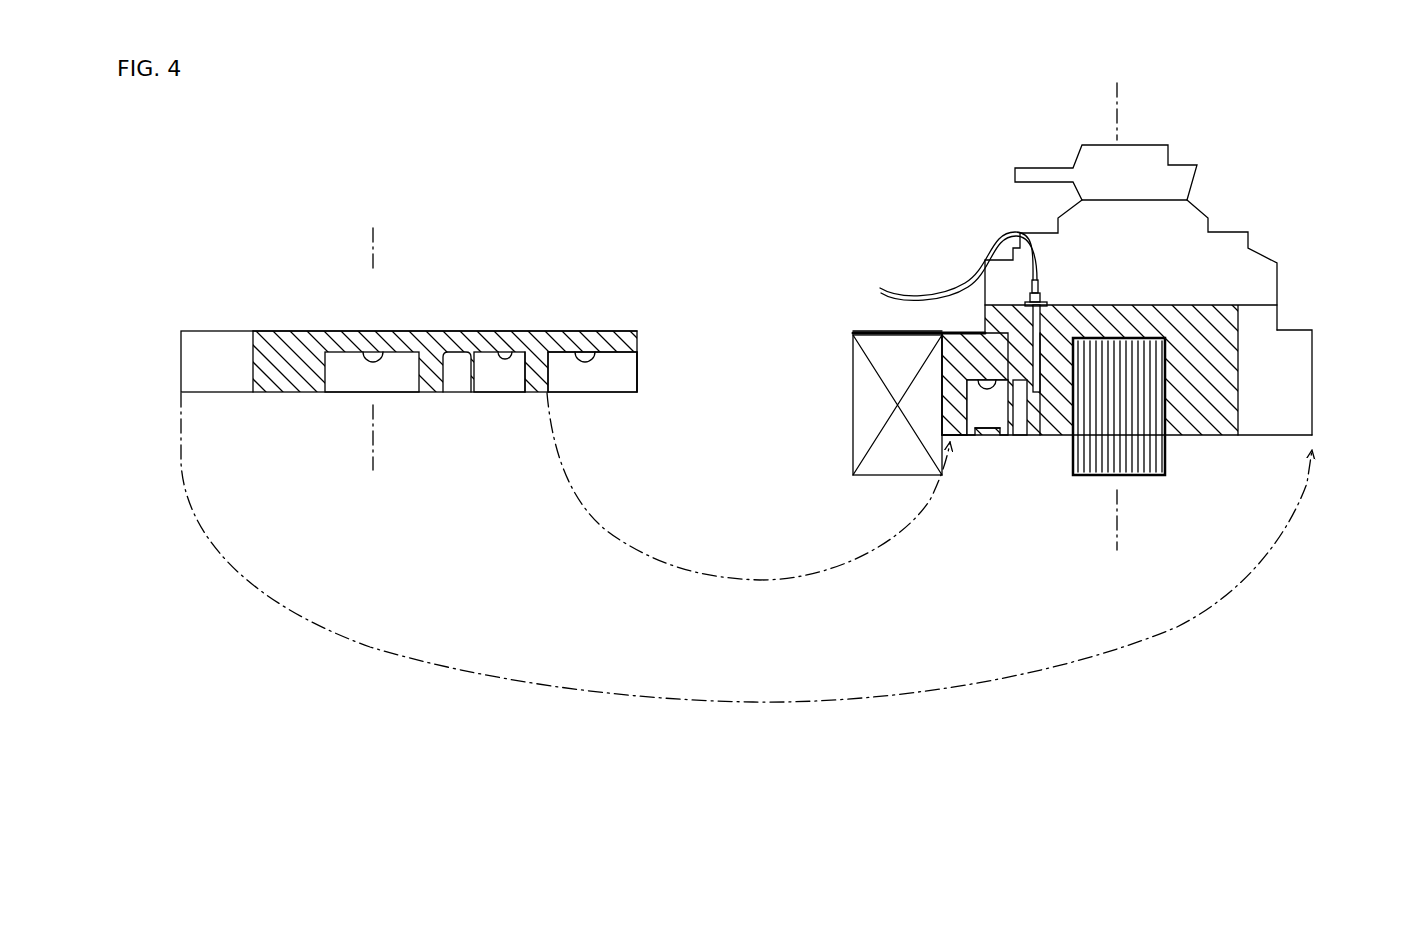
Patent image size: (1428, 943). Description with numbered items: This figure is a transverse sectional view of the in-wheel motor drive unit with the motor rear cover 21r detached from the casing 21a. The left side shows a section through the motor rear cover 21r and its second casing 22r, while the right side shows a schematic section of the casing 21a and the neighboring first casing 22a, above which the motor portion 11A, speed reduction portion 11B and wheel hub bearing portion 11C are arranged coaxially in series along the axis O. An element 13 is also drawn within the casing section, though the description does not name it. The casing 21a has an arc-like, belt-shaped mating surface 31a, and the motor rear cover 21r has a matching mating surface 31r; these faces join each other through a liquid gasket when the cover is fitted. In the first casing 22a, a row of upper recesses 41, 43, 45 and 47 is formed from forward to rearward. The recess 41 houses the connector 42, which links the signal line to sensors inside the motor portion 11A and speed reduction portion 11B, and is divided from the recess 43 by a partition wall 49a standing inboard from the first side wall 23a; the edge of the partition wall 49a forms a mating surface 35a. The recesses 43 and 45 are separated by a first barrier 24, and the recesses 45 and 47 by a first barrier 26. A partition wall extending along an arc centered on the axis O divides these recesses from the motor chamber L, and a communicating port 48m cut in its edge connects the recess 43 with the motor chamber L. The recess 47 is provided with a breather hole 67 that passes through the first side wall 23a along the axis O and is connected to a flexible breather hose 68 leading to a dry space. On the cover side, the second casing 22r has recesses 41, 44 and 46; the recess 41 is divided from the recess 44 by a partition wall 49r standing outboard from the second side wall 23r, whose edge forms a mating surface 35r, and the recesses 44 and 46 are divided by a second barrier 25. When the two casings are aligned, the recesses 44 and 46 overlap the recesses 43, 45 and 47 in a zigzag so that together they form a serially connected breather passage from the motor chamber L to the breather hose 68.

The motor portion 11A is at (1324, 393).
The speed reduction portion 11B is at (1289, 276).
The wheel hub bearing portion 11C is at (1212, 175).
The coil 13 is at (1139, 460).
The motor rear cover 21r is at (349, 328).
The casing 21a is at (1274, 442).
The second casing 22r is at (597, 328).
The first casing 22a is at (874, 326).
The second side wall 23r is at (639, 344).
The first side wall 23a is at (853, 335).
The first barrier 24 is at (992, 438).
The second barrier 25 is at (478, 370).
The first barrier 26 is at (1030, 432).
The mating surface 31r is at (299, 393).
The mating surface 31a is at (1063, 440).
The mating surface 35r is at (536, 393).
The mating surface 35a is at (958, 438).
The recess 41 is at (578, 350).
The connector 42 is at (896, 458).
The recess 43 is at (970, 355).
The recess 44 is at (500, 350).
The recess 45 is at (1027, 380).
The recess 46 is at (447, 350).
The recess 47 is at (1055, 345).
The communicating port 48m is at (995, 420).
The partition wall 49r is at (549, 372).
The partition wall 49a is at (942, 408).
The breather hole 67 is at (1039, 390).
The breather hose 68 is at (893, 288).
The motor chamber L is at (372, 357).
The axis O is at (745, 303).